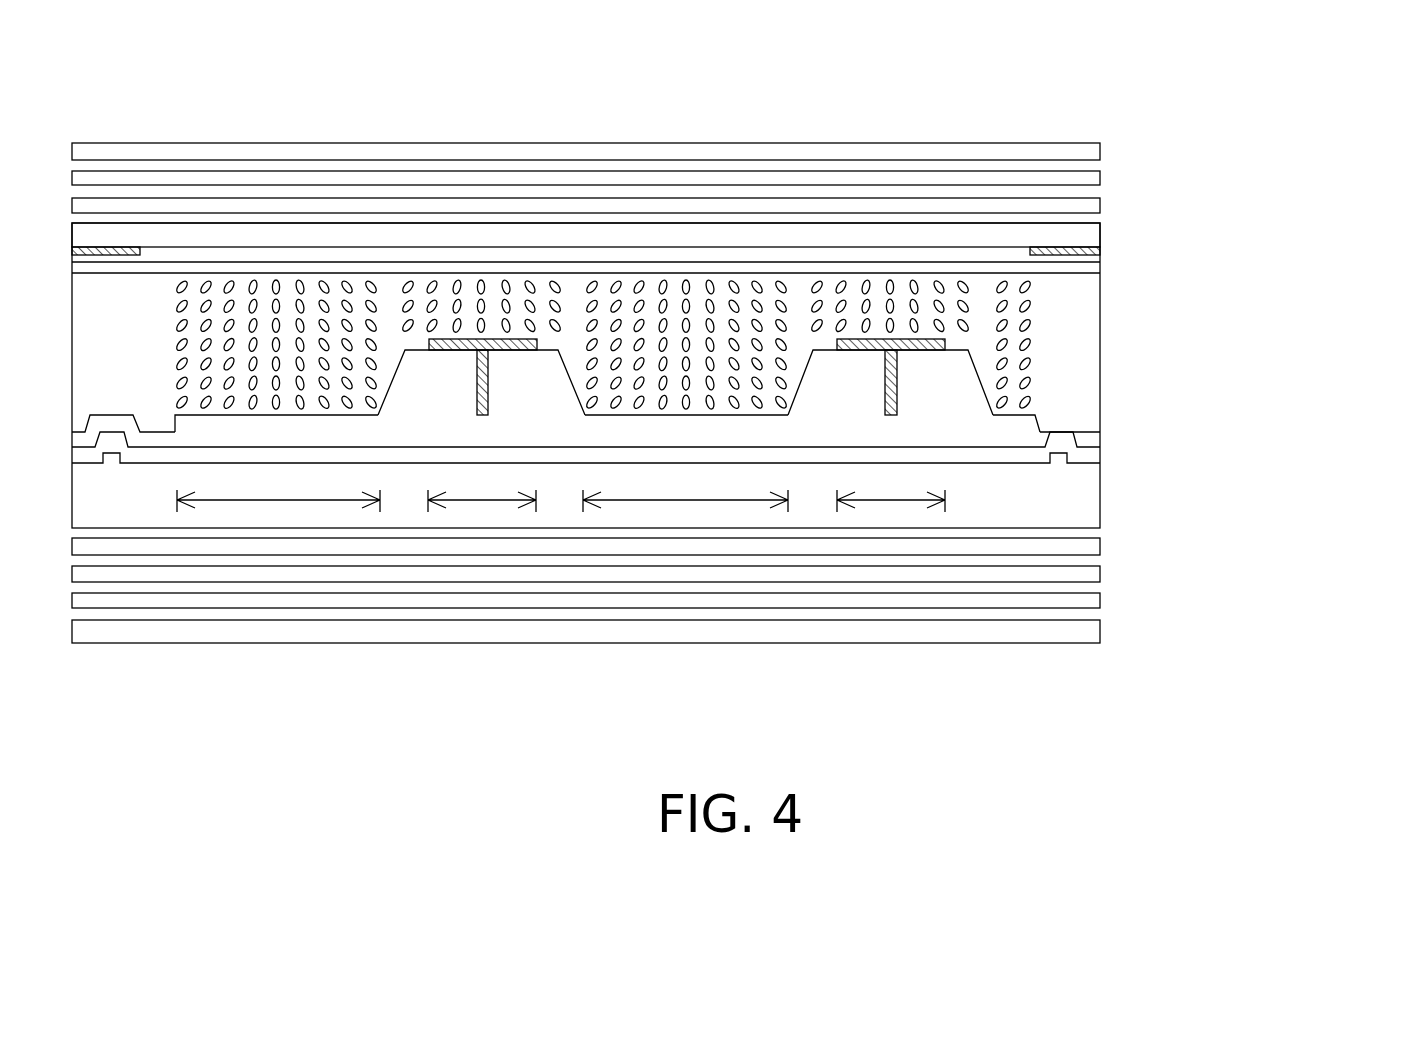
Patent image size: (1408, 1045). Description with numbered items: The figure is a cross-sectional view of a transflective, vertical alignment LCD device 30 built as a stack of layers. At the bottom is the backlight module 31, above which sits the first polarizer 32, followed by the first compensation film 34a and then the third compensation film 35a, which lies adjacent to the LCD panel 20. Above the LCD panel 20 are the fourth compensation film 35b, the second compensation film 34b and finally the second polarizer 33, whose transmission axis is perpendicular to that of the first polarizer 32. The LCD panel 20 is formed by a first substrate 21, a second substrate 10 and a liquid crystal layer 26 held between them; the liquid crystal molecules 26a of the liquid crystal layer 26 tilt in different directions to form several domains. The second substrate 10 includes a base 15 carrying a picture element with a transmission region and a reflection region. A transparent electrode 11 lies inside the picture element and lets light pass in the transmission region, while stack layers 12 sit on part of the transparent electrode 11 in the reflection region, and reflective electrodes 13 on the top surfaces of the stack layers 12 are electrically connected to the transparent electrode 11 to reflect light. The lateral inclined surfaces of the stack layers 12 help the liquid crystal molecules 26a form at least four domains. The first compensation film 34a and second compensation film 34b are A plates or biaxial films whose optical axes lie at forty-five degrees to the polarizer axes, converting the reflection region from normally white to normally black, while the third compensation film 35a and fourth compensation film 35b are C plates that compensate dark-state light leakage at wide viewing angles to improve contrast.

The LCD device 30 is at (1333, 82).
The second polarizer 33 is at (1100, 146).
The second compensation film 34b is at (1100, 173).
The fourth compensation film 35b is at (1100, 201).
The first substrate 21 is at (1103, 250).
The liquid crystal layer 26 is at (1098, 280).
The liquid crystal molecules 26a is at (1027, 308).
The LCD panel 20 is at (740, 375).
The second substrate 10 is at (718, 375).
The transparent electrode 11 is at (965, 427).
The stack layers 12 is at (962, 387).
The reflective electrodes 13 is at (947, 345).
The base 15 is at (1088, 513).
The third compensation film 35a is at (1100, 545).
The first compensation film 34a is at (1100, 572).
The first polarizer 32 is at (1100, 600).
The backlight module 31 is at (1100, 628).